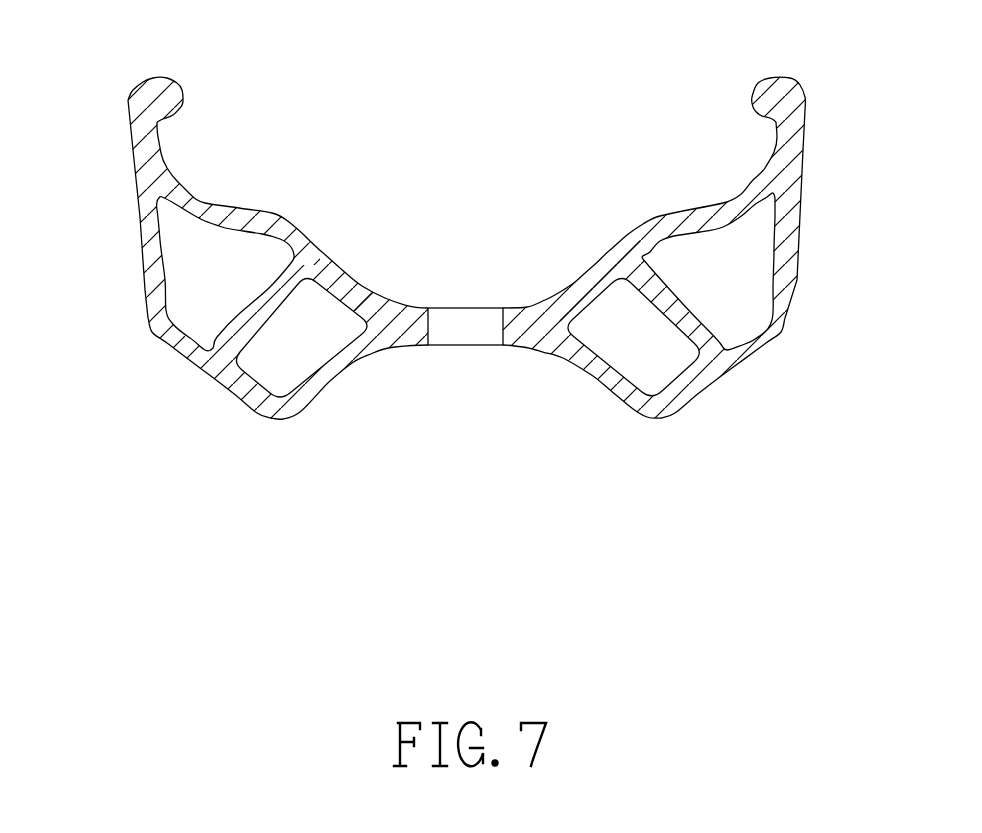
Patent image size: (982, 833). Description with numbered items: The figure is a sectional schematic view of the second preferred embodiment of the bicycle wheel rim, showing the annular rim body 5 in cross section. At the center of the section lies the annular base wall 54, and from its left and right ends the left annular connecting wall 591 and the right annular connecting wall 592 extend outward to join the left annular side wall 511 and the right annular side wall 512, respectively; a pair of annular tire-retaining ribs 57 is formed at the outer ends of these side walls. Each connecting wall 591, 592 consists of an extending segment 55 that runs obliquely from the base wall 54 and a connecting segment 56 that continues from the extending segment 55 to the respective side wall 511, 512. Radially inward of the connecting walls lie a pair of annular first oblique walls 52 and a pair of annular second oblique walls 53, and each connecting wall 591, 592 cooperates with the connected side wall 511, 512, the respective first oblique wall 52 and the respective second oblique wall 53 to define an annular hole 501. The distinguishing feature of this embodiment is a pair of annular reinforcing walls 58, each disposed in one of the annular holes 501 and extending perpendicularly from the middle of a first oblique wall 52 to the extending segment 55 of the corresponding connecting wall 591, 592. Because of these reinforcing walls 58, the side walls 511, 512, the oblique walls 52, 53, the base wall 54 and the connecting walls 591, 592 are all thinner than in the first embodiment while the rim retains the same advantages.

The annular rim body 5 is at (470, 249).
The annular hole 501 is at (192, 303).
The left annular side wall 511 is at (150, 246).
The right annular side wall 512 is at (783, 230).
The annular first oblique wall 52 is at (204, 376).
The annular second oblique wall 53 is at (350, 360).
The annular base wall 54 is at (413, 336).
The extending segment 55 is at (347, 280).
The connecting segment 56 is at (228, 203).
The annular tire-retaining rib 57 is at (166, 100).
The annular reinforcing wall 58 is at (257, 318).
The left annular connecting wall 591 is at (315, 197).
The right annular connecting wall 592 is at (638, 203).